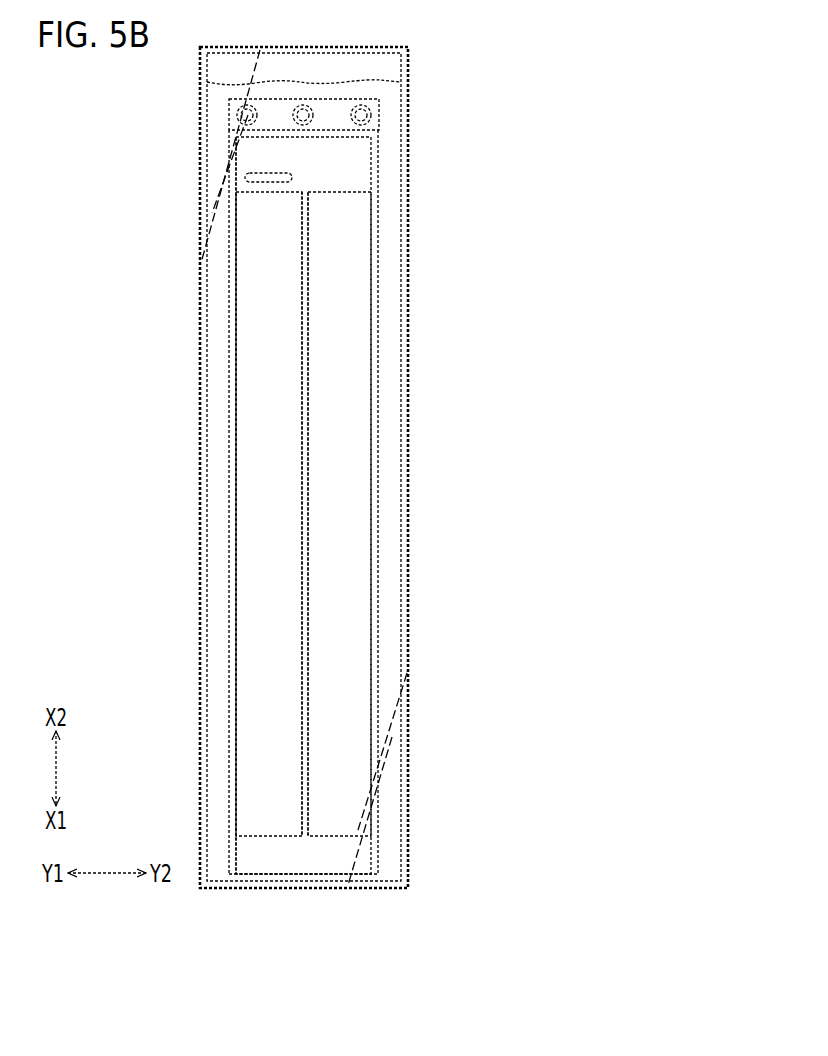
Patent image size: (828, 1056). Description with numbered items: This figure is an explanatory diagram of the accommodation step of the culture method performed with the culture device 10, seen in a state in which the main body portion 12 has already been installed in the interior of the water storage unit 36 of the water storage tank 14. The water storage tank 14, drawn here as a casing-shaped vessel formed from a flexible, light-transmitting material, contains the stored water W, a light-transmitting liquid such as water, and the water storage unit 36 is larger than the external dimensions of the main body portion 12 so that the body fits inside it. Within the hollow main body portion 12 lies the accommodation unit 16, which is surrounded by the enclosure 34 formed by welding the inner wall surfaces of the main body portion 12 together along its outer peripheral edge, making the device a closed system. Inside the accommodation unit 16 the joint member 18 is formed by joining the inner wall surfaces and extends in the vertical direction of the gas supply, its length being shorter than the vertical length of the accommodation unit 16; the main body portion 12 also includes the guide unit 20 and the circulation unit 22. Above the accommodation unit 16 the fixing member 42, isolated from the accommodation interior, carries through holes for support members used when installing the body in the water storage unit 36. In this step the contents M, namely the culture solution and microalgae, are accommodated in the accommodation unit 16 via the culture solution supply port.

The culture device 10 is at (474, 128).
The main body portion 12 is at (327, 500).
The water storage tank 14 is at (411, 190).
The accommodation unit 16 is at (474, 375).
The joint member 18 is at (305, 509).
The guide unit 20 is at (281, 399).
The circulation unit 22 is at (328, 443).
The enclosure 34 is at (234, 502).
The water storage unit 36 is at (226, 436).
The fixing member 42 is at (379, 100).
The contents M is at (273, 342).
The stored water W is at (388, 329).